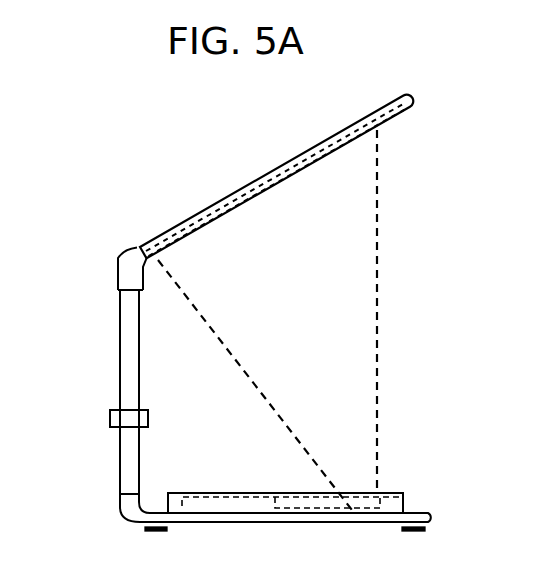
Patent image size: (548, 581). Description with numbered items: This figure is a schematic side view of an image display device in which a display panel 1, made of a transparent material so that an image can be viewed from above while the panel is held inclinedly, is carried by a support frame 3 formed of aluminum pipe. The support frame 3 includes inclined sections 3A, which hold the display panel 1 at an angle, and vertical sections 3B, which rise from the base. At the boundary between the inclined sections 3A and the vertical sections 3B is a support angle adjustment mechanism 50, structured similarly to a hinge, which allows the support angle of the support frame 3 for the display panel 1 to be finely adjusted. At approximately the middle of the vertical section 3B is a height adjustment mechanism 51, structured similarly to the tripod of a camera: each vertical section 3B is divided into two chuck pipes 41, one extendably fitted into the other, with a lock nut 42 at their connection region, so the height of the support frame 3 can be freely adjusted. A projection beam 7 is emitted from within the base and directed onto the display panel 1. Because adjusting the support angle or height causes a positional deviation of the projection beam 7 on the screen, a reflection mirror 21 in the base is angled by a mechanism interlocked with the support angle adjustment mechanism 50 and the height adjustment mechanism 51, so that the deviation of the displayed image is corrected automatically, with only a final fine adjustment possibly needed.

The display panel 1 is at (232, 194).
The support frame 3 is at (368, 116).
The inclined sections 3A is at (287, 163).
The vertical sections 3B is at (127, 327).
The projection beam 7 is at (355, 285).
The reflection mirror 21 is at (383, 496).
The chuck pipes 41 is at (133, 398).
The lock nut 42 is at (148, 417).
The support angle adjustment mechanism 50 is at (118, 258).
The height adjustment mechanism 51 is at (110, 435).